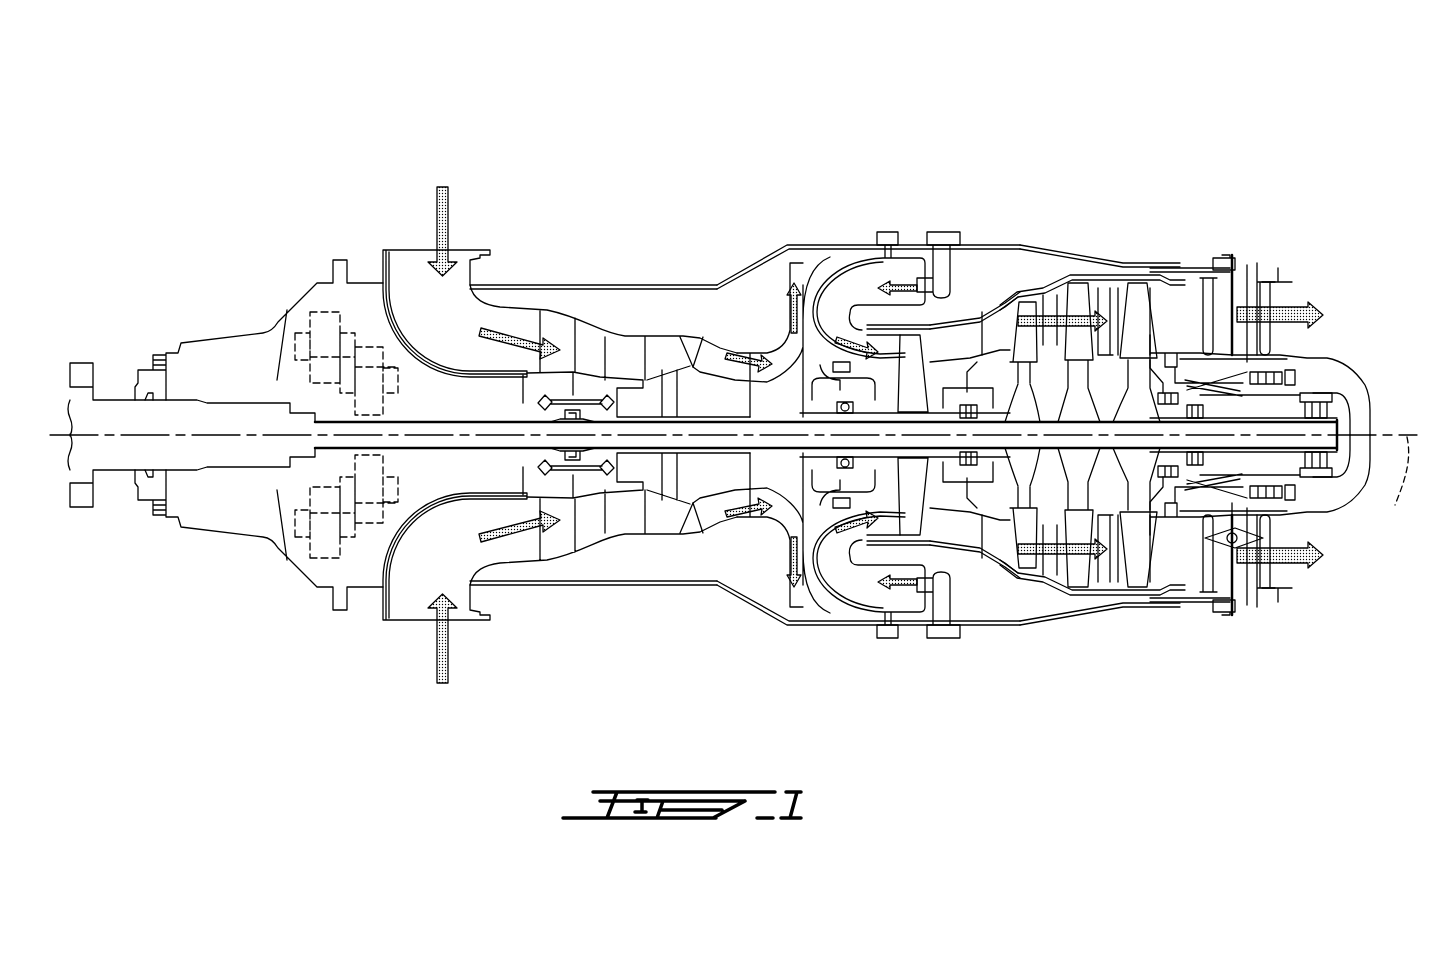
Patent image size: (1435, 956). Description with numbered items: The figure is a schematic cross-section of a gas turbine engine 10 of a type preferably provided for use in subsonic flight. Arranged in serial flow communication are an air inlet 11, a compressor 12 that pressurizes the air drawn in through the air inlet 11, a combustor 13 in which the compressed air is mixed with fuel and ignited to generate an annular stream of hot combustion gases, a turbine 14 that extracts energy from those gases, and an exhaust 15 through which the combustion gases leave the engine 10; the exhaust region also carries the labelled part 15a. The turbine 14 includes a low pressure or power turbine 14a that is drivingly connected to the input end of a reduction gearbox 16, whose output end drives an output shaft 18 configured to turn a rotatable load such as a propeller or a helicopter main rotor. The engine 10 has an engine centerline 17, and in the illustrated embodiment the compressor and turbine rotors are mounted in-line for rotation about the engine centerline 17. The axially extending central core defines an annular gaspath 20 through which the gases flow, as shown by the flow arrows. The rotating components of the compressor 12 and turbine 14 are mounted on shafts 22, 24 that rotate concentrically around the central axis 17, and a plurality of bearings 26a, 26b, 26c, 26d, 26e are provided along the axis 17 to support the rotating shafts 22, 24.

The gas turbine engine 10 is at (240, 170).
The air inlet 11 is at (415, 262).
The compressor 12 is at (630, 308).
The combustor 13 is at (908, 268).
The turbine 14 is at (1035, 262).
The power turbine 14a is at (1143, 300).
The exhaust 15 is at (1319, 237).
The exhaust duct 15a is at (1191, 262).
The reduction gearbox 16 is at (296, 318).
The engine centerline 17 is at (1394, 485).
The output shaft 18 is at (113, 455).
The annular gaspath 20 is at (925, 628).
The shaft 22 is at (780, 415).
The shaft 24 is at (1283, 450).
The bearing 26a is at (555, 490).
The bearing 26b is at (794, 486).
The bearing 26c is at (979, 472).
The bearing 26d is at (1213, 475).
The bearing 26e is at (1350, 401).